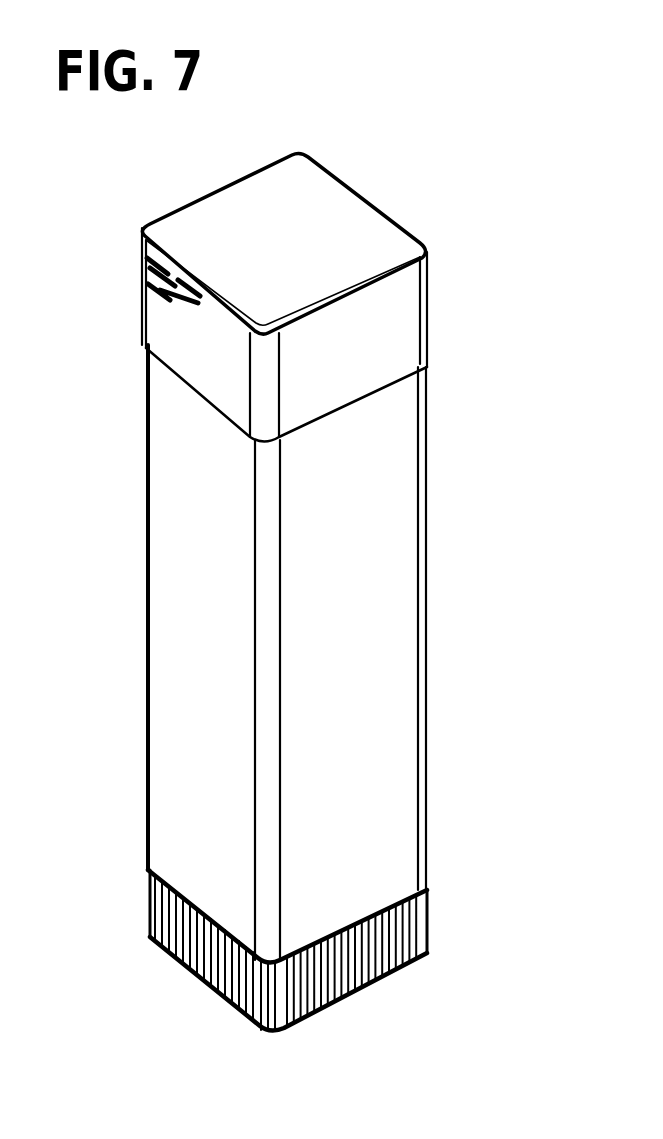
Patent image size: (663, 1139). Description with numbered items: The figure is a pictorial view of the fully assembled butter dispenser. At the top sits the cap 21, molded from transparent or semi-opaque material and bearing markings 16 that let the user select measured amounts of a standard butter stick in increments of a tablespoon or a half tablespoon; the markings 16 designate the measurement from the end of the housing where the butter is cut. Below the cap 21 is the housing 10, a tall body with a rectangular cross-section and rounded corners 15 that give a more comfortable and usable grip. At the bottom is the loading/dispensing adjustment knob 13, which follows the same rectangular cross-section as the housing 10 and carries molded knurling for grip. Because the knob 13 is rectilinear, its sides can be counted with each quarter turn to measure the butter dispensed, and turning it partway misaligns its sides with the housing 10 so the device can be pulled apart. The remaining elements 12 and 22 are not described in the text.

The housing 10 is at (197, 597).
The cap 12 is at (143, 347).
The loading/dispensing adjustment knob 13 is at (432, 915).
The rounded corners 15 is at (425, 480).
The markings 16 is at (143, 263).
The cap 21 is at (298, 190).
The grooves 22 is at (150, 908).